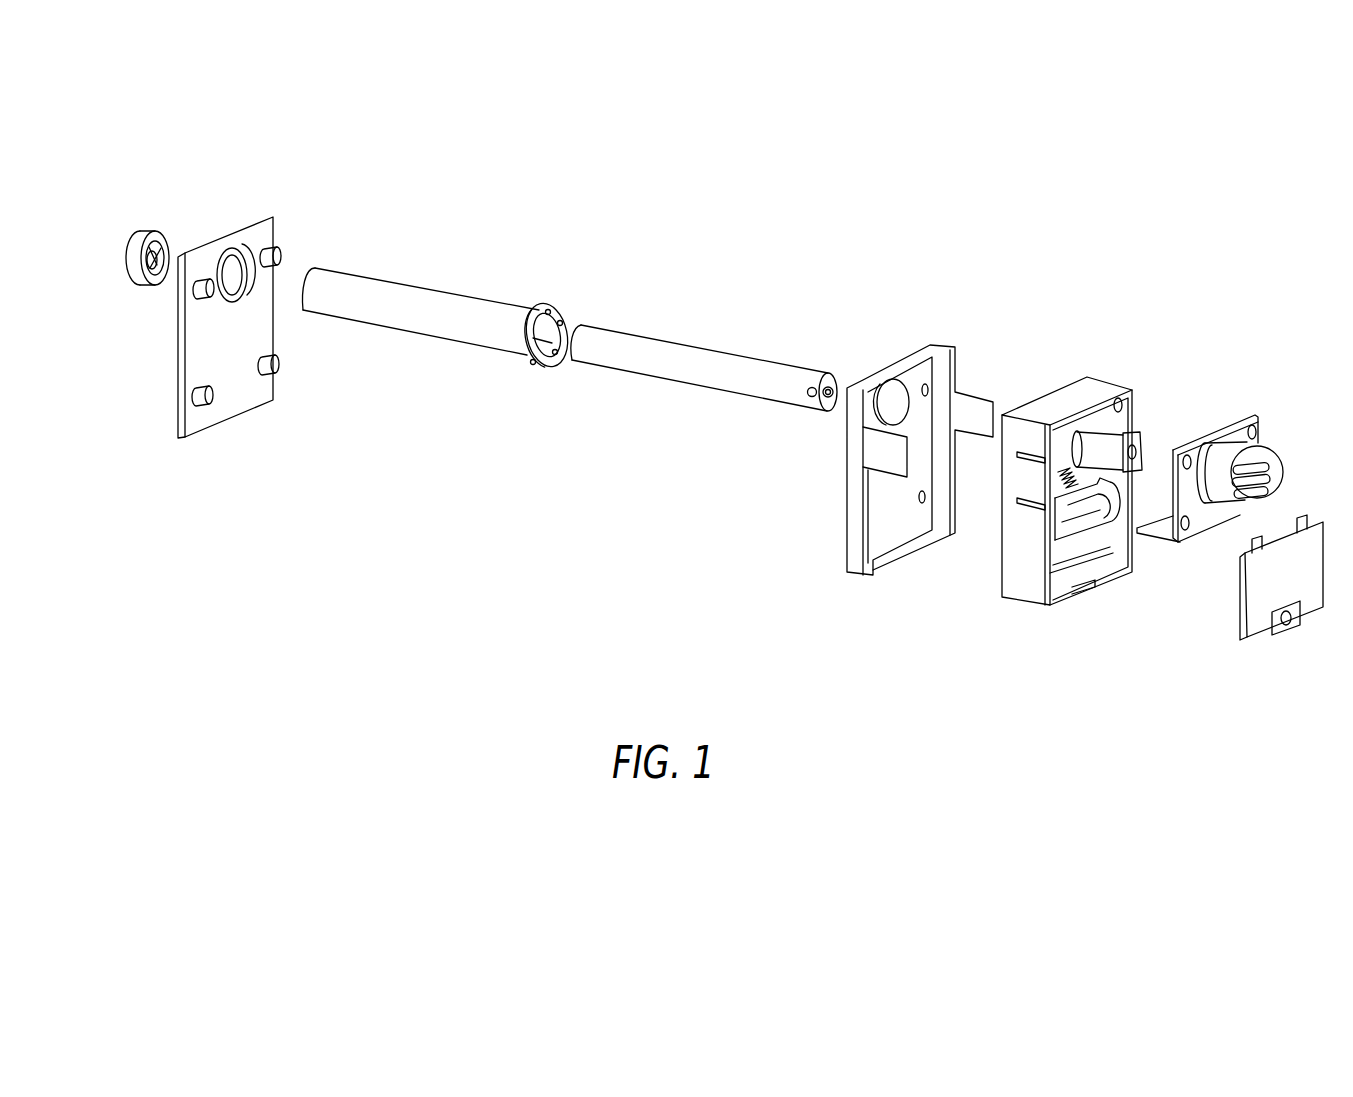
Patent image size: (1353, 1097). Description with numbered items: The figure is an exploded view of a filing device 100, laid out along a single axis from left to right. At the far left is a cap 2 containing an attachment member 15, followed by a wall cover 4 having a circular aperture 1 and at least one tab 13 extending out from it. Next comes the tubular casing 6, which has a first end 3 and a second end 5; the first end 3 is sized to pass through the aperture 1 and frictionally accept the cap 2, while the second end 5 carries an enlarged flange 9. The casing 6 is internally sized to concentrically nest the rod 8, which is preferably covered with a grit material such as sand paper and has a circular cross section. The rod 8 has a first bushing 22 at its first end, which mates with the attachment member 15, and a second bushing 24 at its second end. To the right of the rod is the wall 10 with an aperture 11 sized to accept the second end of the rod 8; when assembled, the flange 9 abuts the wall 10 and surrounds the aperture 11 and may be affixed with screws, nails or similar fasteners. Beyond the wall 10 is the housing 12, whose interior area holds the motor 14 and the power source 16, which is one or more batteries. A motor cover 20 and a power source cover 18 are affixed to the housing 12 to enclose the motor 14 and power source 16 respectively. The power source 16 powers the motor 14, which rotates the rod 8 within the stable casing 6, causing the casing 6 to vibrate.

The filing device 100 is at (820, 203).
The aperture 1 is at (232, 273).
The cap 2 is at (150, 231).
The first end 3 is at (303, 272).
The wall cover 4 is at (277, 240).
The second end 5 is at (534, 366).
The casing 6 is at (493, 302).
The rod 8 is at (712, 350).
The flange 9 is at (562, 308).
The wall 10 is at (847, 547).
The aperture 11 is at (895, 404).
The housing 12 is at (1043, 600).
The tab 13 is at (213, 403).
The motor 14 is at (1138, 426).
The attachment member 15 is at (155, 263).
The power source 16 is at (1077, 517).
The power source cover 18 is at (1257, 635).
The motor cover 20 is at (1167, 540).
The first bushing 22 is at (574, 333).
The second bushing 24 is at (838, 385).